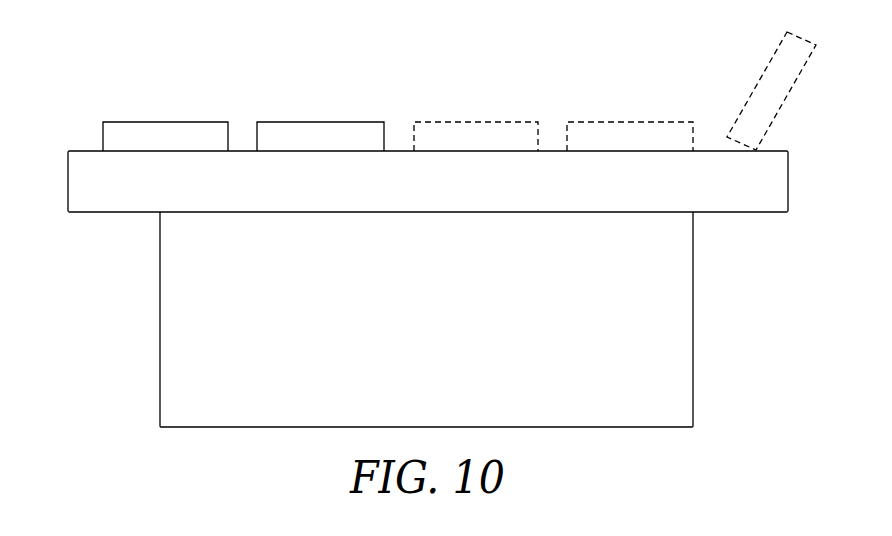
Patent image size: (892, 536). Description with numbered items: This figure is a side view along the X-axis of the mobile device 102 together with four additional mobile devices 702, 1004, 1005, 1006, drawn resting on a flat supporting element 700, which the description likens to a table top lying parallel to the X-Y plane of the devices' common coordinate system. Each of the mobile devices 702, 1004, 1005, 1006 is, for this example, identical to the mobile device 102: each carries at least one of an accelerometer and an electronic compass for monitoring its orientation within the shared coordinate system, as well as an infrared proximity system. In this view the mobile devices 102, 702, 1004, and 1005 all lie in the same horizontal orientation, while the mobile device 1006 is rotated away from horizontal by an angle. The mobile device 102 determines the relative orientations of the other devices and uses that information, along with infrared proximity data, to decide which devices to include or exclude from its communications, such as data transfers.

The substrate 700 is at (78, 151).
The mobile device 102 is at (165, 122).
The additional mobile device 702 is at (323, 122).
The additional mobile device 1004 is at (477, 122).
The additional mobile device 1005 is at (632, 122).
The additional mobile device 1006 is at (766, 70).